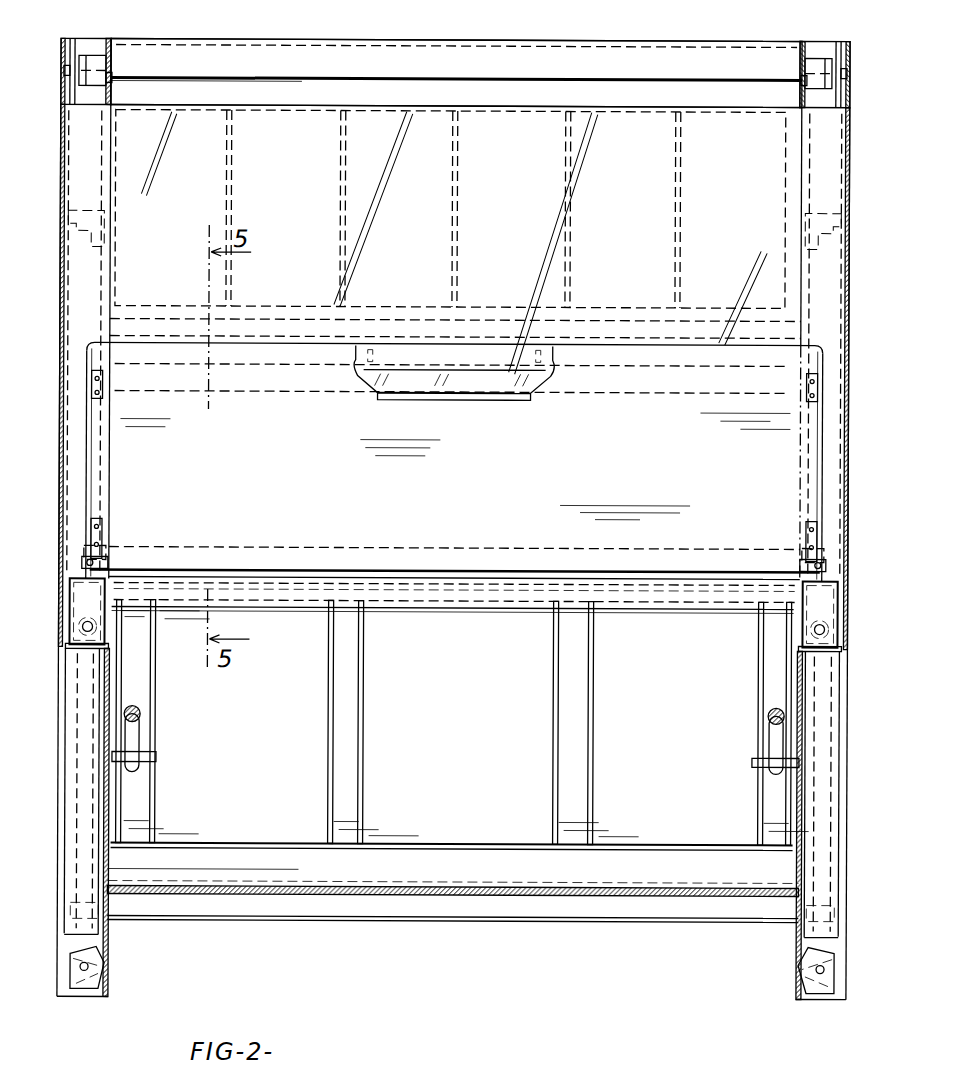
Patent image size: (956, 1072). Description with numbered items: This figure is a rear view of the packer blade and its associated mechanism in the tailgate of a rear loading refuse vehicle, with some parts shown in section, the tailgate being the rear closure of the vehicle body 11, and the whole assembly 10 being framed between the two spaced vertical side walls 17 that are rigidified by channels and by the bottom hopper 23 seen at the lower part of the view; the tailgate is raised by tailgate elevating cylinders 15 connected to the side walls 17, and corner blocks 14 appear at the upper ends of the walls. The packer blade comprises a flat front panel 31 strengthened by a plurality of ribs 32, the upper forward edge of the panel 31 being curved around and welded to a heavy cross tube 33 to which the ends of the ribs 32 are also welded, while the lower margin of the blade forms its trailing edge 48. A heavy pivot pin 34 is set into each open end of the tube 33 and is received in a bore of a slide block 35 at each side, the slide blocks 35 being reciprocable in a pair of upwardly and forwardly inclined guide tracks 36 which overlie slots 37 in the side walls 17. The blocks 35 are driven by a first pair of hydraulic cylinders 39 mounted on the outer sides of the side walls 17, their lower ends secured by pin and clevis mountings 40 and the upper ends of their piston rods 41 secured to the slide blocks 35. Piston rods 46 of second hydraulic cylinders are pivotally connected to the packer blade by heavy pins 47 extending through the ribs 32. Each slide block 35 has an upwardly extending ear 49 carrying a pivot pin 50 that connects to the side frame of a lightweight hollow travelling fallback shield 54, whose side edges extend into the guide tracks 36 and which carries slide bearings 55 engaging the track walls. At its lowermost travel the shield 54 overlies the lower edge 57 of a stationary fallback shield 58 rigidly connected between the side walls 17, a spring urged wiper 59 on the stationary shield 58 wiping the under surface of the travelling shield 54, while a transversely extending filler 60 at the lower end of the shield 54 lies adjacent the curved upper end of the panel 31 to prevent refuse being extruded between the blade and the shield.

The enclosure assembly 10 is at (548, 39).
The body 11 is at (663, 44).
The corner post block 14 is at (82, 52).
The side walls 17 is at (118, 90).
The slots 37 is at (104, 178).
The tailgate elevating cylinders 15 is at (68, 306).
The stationary fallback shield 58 is at (636, 227).
The fallback shield 54 is at (654, 485).
The guide tracks 36 is at (72, 500).
The slide bearings 55 is at (102, 410).
The ear 49 is at (86, 548).
The pivot pin 50 is at (84, 564).
The pivot pin 34 is at (76, 586).
The slide block 35 is at (72, 612).
The piston rods 41 is at (78, 646).
The hydraulic cylinders 39 is at (76, 806).
The pin and clevis mountings 40 is at (104, 968).
The front panel 31 is at (496, 761).
The ribs 32 is at (334, 728).
The piston rods 46 is at (142, 717).
The pins 47 is at (150, 762).
The cross tube 33 is at (632, 620).
The filler 60 is at (428, 594).
The trailing edge 48 is at (476, 850).
The hopper 23 is at (316, 898).
The lower edge 57 is at (432, 374).
The wiper 59 is at (490, 396).